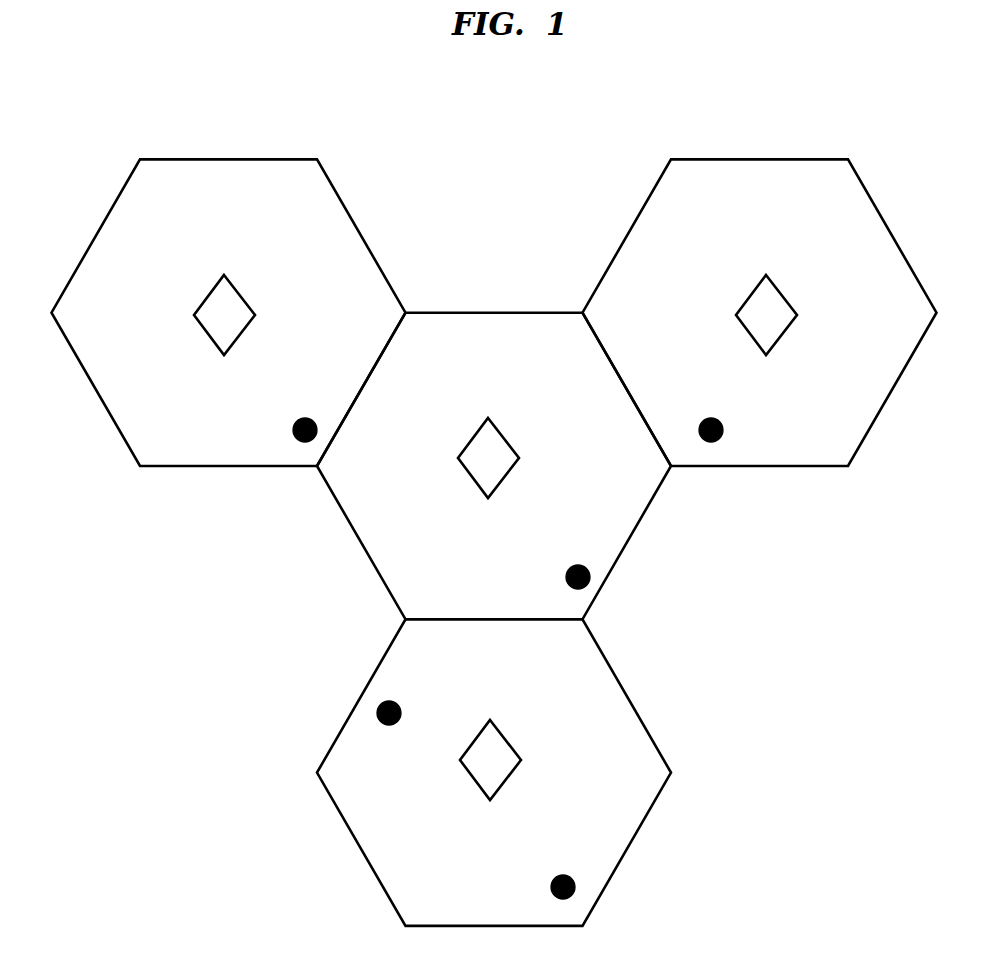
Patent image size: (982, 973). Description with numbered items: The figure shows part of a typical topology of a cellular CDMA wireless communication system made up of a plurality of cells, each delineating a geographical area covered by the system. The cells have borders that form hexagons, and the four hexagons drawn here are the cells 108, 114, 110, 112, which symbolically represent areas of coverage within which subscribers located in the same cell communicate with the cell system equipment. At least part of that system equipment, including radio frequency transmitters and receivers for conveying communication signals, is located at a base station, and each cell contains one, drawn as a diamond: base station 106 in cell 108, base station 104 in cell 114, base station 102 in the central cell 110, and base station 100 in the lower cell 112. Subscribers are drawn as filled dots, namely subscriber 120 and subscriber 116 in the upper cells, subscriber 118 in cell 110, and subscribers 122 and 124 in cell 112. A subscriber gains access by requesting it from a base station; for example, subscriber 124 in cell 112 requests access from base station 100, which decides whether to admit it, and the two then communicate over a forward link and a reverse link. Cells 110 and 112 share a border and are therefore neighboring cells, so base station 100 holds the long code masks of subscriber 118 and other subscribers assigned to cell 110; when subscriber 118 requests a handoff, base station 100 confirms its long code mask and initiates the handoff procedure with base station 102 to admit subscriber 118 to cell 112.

The base station 100 is at (475, 783).
The base station 102 is at (508, 441).
The base station 104 is at (787, 294).
The base station 106 is at (244, 295).
The cell 108 is at (362, 227).
The cell 110 is at (363, 548).
The cell 112 is at (365, 862).
The cell 114 is at (630, 227).
The subscriber 116 is at (722, 426).
The subscriber 118 is at (590, 582).
The subscriber 120 is at (293, 440).
The subscriber 122 is at (401, 708).
The subscriber 124 is at (575, 893).